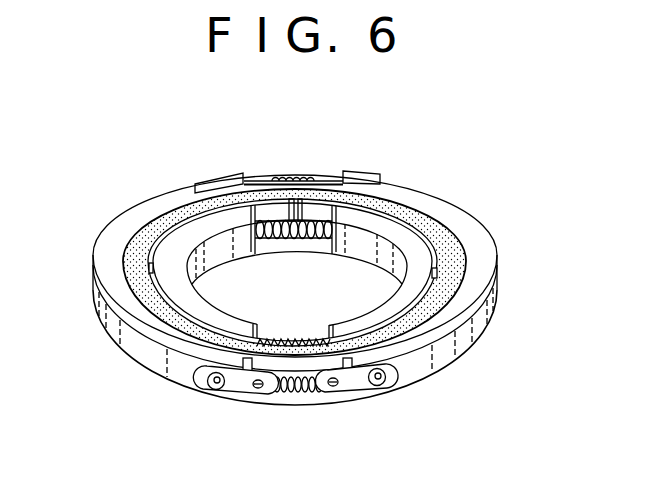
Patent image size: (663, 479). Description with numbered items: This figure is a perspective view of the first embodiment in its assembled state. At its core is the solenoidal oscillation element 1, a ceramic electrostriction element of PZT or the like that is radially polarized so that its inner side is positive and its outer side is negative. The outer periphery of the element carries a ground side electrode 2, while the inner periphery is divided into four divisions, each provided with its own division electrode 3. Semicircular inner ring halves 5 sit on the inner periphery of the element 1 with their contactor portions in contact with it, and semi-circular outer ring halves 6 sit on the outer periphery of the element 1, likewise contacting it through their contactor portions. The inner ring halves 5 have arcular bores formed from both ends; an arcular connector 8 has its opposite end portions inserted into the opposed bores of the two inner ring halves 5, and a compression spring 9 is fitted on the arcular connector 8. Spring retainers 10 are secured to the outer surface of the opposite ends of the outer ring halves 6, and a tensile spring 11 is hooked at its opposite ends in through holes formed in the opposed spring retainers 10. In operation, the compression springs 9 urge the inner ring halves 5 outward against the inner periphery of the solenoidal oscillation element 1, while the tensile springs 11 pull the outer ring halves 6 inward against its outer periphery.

The solenoidal oscillation element 1 is at (447, 258).
The ground side electrode 2 is at (480, 269).
The division electrodes 3 is at (187, 242).
The inner ring halves 5 is at (158, 220).
The outer ring halves 6 is at (105, 256).
The arcular connector 8 is at (323, 178).
The compression spring 9 is at (277, 221).
The spring retainers 10 is at (254, 177).
The tensile spring 11 is at (301, 222).